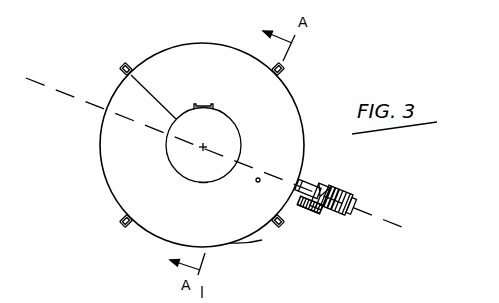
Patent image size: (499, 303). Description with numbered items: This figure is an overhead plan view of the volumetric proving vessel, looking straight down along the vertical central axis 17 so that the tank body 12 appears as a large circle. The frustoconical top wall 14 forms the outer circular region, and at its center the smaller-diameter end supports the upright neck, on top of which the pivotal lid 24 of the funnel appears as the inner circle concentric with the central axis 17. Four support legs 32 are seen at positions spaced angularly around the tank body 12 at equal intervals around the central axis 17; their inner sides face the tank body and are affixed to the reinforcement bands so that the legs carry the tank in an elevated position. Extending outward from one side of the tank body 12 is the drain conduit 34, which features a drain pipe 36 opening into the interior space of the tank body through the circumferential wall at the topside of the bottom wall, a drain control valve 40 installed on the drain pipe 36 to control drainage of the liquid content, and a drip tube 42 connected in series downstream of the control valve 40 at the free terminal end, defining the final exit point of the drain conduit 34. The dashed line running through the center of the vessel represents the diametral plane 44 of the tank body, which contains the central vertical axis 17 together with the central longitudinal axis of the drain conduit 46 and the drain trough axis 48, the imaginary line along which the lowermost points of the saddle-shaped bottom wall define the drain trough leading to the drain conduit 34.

The tank body 12 is at (125, 180).
The top wall 14 is at (246, 236).
The vertical central axis 17 is at (205, 143).
The pivotal lid 24 is at (230, 131).
The support legs 32 is at (122, 63).
The drain conduit 34 is at (330, 222).
The drain pipe 36 is at (304, 182).
The drain control valve 40 is at (307, 212).
The drip tube 42 is at (355, 198).
The diametral plane 44 is at (372, 207).
The central longitudinal axis of the drain conduit 46 is at (342, 202).
The drain trough axis 48 is at (346, 204).